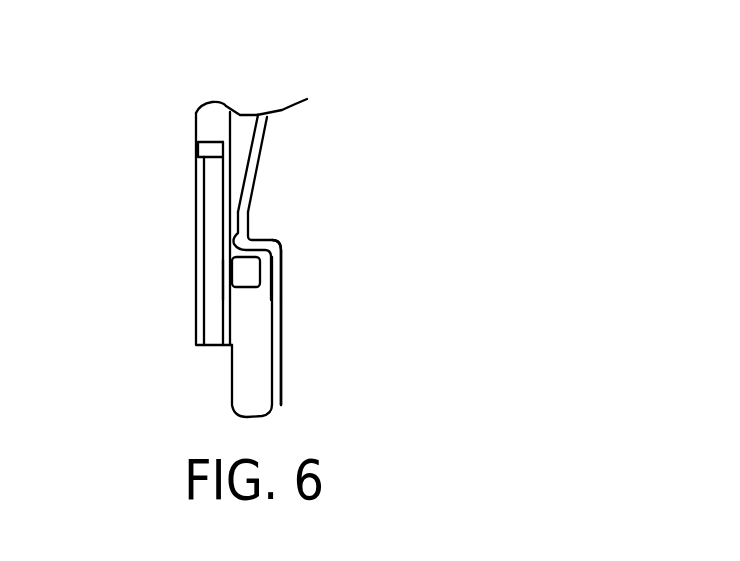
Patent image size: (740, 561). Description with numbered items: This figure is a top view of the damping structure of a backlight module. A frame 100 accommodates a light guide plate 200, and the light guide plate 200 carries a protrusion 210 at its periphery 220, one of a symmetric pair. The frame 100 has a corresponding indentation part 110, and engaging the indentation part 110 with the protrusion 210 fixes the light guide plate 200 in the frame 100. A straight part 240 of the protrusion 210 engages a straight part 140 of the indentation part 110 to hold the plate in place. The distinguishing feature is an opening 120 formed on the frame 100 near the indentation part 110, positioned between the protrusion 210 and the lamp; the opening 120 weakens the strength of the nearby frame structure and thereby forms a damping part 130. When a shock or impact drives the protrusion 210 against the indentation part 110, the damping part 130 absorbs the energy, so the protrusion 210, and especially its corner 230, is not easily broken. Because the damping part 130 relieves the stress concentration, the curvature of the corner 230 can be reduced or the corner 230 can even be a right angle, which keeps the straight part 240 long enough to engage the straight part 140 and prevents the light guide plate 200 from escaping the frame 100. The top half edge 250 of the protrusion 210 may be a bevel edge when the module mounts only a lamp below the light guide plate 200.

The frame 100 is at (213, 190).
The indentation part 110 is at (223, 220).
The opening 120 is at (223, 277).
The damping part 130 is at (232, 256).
The straight part of the indentation part 140 is at (282, 312).
The light guide plate 200 is at (403, 172).
The protrusion 210 is at (256, 216).
The periphery 220 is at (284, 114).
The corner 230 is at (283, 251).
The straight part of the protrusion 240 is at (270, 233).
The top half edge 250 is at (257, 170).